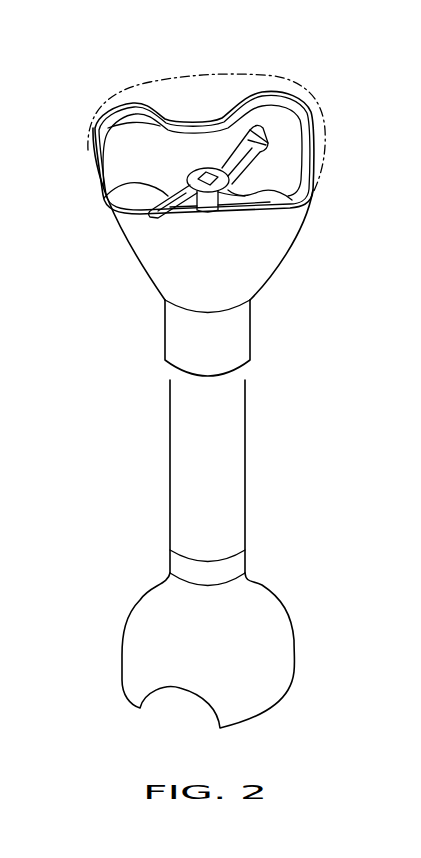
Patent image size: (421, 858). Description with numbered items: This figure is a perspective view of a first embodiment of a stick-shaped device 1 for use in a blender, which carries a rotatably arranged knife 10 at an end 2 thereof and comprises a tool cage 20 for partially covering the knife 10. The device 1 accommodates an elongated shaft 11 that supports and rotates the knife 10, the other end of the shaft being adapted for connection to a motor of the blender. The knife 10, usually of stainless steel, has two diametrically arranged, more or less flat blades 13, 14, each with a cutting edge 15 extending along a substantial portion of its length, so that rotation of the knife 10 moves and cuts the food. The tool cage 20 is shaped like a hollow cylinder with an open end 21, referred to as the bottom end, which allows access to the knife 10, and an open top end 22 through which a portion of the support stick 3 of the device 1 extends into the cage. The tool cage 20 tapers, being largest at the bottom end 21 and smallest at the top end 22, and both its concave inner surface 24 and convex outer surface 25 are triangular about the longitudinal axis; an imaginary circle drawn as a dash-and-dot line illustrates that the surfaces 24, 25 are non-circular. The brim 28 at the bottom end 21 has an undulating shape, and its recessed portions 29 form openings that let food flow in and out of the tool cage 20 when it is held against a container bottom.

The stick-shaped device 1 is at (142, 460).
The end 2 is at (300, 283).
The support stick 3 is at (232, 458).
The knife 10 is at (126, 192).
The shaft 11 is at (258, 204).
The blade 13 is at (255, 143).
The blade 14 is at (135, 218).
The cutting edge 15 is at (257, 171).
The tool cage 20 is at (258, 239).
The open end 21 is at (84, 126).
The top end 22 is at (140, 320).
The inner surface 24 is at (128, 140).
The outer surface 25 is at (143, 243).
The brim 28 is at (157, 117).
The recessed portions 29 is at (207, 92).